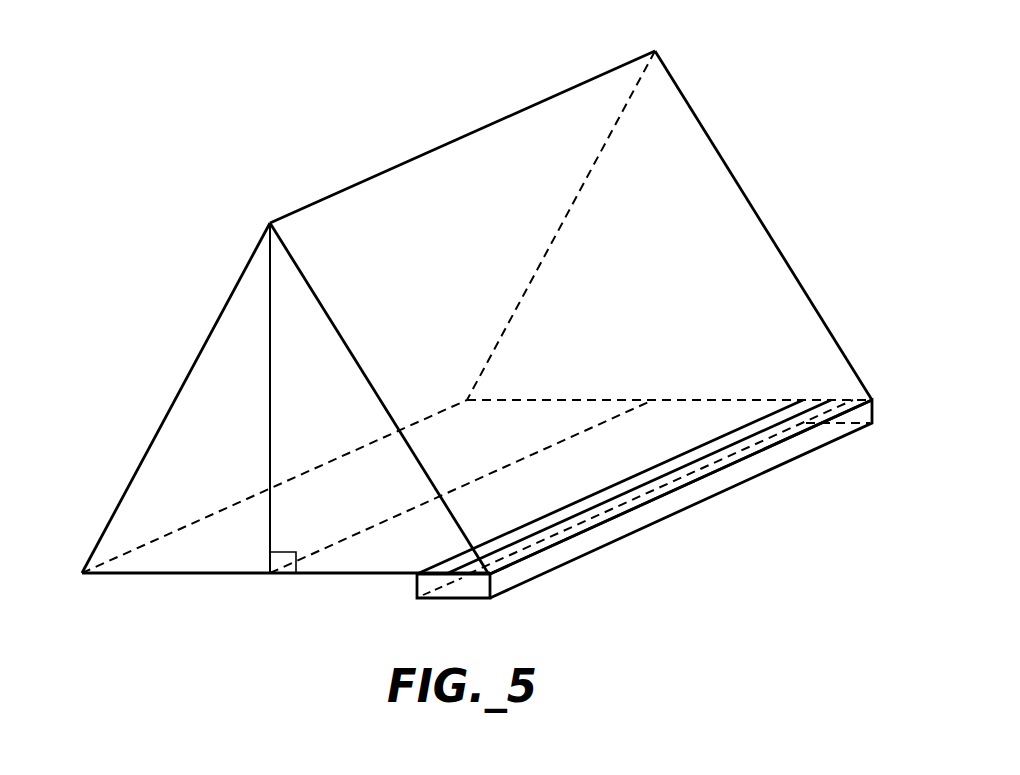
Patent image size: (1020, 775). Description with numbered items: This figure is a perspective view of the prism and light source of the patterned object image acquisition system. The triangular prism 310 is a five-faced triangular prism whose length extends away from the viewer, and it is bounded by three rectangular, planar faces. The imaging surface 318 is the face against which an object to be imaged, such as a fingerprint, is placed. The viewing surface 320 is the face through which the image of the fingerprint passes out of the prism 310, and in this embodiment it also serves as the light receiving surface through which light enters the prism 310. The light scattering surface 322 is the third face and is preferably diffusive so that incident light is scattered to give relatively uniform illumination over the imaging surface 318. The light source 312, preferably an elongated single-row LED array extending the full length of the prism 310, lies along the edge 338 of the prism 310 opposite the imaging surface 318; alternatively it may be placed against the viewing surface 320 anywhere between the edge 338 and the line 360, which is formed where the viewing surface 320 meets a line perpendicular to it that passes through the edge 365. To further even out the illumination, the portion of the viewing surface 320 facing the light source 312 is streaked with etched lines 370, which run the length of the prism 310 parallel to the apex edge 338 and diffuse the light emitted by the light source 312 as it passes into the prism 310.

The triangular prism 310 is at (700, 110).
The light source 312 is at (812, 452).
The imaging surface 318 is at (255, 288).
The viewing surface 320 is at (127, 552).
The light scattering surface 322 is at (735, 212).
The edge 338 is at (513, 564).
The line 360 is at (350, 538).
The edge 365 is at (550, 96).
The lines 370 is at (814, 420).